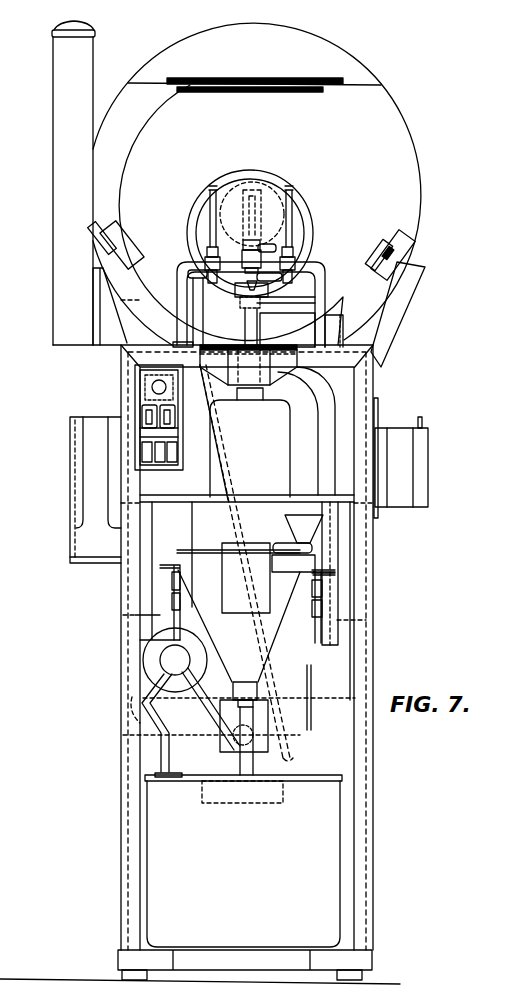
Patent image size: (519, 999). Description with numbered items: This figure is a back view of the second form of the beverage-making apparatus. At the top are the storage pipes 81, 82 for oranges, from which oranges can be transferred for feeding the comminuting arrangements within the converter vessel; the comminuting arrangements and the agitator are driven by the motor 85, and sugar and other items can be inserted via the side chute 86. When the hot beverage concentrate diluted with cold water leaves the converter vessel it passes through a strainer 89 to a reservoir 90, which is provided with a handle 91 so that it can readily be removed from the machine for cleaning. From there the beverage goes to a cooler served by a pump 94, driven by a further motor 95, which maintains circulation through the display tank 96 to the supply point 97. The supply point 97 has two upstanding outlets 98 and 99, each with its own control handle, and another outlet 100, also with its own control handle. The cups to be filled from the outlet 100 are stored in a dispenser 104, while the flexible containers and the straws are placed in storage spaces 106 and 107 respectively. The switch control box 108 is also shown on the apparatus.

The storage pipe 81 is at (410, 202).
The storage pipe 82 is at (113, 175).
The display tank 96 is at (212, 173).
The upstanding outlet 98 is at (212, 210).
The upstanding outlet 99 is at (298, 203).
The outlet 100 is at (243, 292).
The supply point 97 is at (320, 263).
The dispenser 104 is at (62, 120).
The switch control box 108 is at (142, 398).
The motor 85 is at (248, 421).
The storage space 107 is at (410, 469).
The storage space 106 is at (78, 498).
The side chute 86 is at (232, 579).
The further motor 95 is at (153, 645).
The pump 94 is at (168, 660).
The handle 91 is at (223, 757).
The strainer 89 is at (208, 770).
The reservoir 90 is at (160, 843).